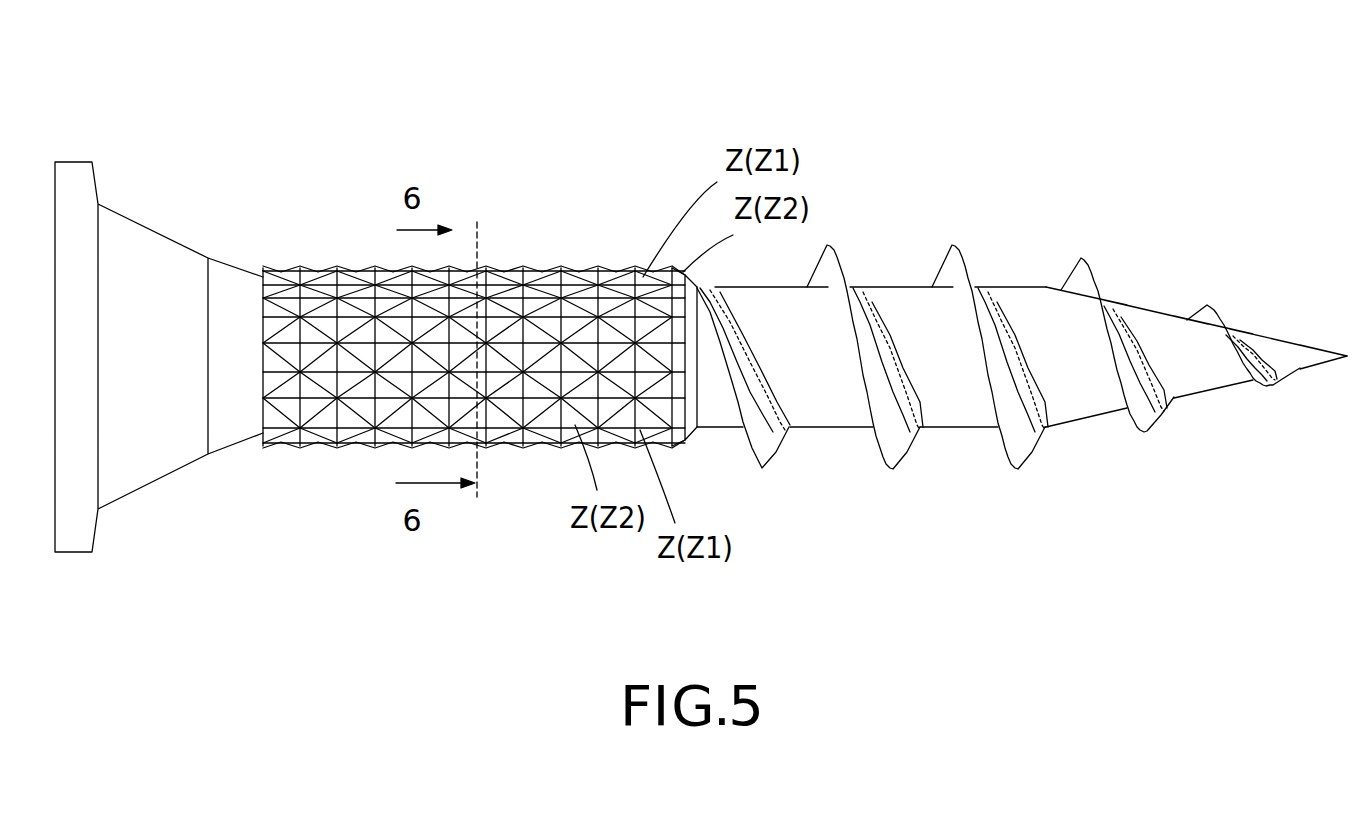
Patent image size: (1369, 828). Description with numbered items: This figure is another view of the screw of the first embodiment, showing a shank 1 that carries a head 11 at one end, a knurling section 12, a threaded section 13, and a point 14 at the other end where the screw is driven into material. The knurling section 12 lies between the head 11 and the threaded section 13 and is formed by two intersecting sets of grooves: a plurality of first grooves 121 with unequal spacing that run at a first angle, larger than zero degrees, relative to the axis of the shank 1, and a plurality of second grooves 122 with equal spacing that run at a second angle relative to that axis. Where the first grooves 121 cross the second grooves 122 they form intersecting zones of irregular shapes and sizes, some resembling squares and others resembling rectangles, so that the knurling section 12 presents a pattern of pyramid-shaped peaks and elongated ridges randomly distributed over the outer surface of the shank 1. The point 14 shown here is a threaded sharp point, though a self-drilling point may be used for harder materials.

The shank 1 is at (643, 150).
The head 11 is at (76, 172).
The knurling section 12 is at (297, 257).
The first grooves 121 is at (607, 275).
The second grooves 122 is at (575, 430).
The threaded section 13 is at (955, 245).
The point 14 is at (1312, 345).